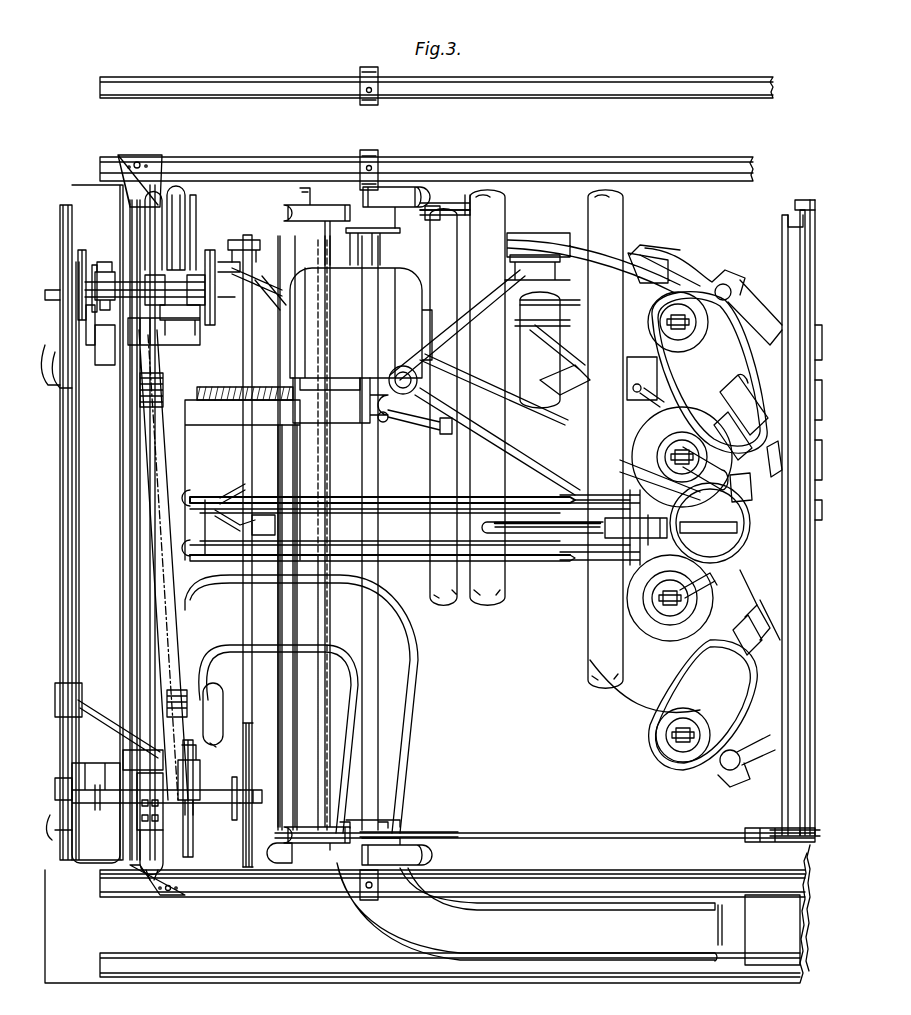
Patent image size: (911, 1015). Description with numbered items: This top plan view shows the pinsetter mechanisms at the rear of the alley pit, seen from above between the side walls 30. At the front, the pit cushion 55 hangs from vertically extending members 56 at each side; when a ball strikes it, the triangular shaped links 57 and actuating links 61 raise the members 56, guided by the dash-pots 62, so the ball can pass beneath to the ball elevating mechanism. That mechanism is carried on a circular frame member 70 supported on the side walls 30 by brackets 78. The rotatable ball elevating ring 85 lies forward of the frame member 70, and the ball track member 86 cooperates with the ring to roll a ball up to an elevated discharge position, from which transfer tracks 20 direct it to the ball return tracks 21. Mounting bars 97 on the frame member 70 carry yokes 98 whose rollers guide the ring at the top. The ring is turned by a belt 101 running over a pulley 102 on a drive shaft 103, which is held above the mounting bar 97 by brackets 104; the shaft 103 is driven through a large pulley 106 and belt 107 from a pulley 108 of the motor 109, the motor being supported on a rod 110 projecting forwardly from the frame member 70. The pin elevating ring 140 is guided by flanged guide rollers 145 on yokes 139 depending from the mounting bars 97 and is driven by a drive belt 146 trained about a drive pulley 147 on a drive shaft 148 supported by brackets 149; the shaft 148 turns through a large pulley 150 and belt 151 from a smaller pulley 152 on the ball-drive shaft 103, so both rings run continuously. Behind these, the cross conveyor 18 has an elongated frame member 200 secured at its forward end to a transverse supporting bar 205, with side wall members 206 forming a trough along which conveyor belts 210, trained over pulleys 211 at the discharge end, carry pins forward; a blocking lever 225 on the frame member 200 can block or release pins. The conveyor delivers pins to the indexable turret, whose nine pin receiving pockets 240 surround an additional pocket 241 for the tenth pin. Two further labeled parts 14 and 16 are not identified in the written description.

The roller assembly 14 is at (665, 700).
The feed unit 16 is at (90, 618).
The cross conveyor 18 is at (405, 565).
The transfer tracks 20 is at (358, 703).
The ball return tracks 21 is at (770, 967).
The side walls 30 is at (548, 168).
The pit cushion 55 is at (318, 770).
The vertically extending members 56 is at (325, 212).
The triangular shaped link 57 is at (365, 822).
The actuating link 61 is at (465, 200).
The dash-pot 62 is at (397, 192).
The circular frame member 70 is at (155, 197).
The brackets 78 is at (135, 165).
The ball elevating ring 85 is at (195, 200).
The ball track member 86 is at (218, 705).
The mounting bar 97 is at (84, 285).
The yoke 98 is at (195, 282).
The belt 101 is at (180, 185).
The pulley 102 is at (185, 790).
The drive shaft 103 is at (205, 799).
The brackets 104 is at (80, 822).
The large pulley 106 is at (250, 733).
The belt 107 is at (252, 630).
The pulley 108 is at (237, 340).
The motor 109 is at (350, 336).
The rod 110 is at (283, 420).
The yokes 139 is at (105, 272).
The pin elevating ring 140 is at (115, 519).
The flanged guide rollers 145 is at (105, 352).
The drive belt 146 is at (132, 440).
The drive pulley 147 is at (92, 330).
The drive shaft 148 is at (172, 268).
The brackets 149 is at (82, 248).
The large pulley 150 is at (60, 250).
The belt 151 is at (62, 388).
The smaller pulley 152 is at (55, 830).
The frame member 200 is at (415, 537).
The supporting bar 205 is at (595, 665).
The side wall members 206 is at (437, 497).
The conveyor belts 210 is at (335, 505).
The complementary pulleys 211 is at (598, 493).
The blocking lever 225 is at (487, 527).
The pin receiving pockets 240 is at (695, 420).
The additional pin receiving pocket 241 is at (720, 520).